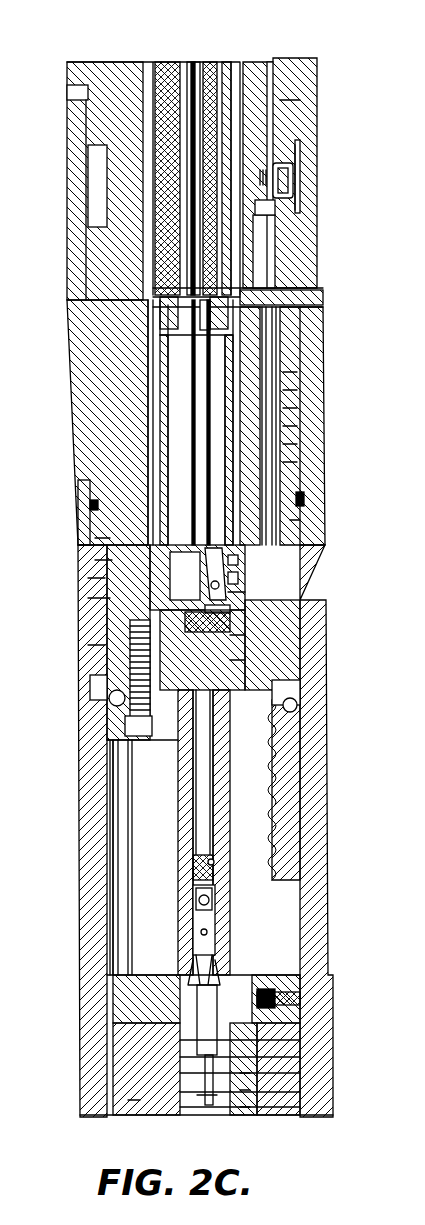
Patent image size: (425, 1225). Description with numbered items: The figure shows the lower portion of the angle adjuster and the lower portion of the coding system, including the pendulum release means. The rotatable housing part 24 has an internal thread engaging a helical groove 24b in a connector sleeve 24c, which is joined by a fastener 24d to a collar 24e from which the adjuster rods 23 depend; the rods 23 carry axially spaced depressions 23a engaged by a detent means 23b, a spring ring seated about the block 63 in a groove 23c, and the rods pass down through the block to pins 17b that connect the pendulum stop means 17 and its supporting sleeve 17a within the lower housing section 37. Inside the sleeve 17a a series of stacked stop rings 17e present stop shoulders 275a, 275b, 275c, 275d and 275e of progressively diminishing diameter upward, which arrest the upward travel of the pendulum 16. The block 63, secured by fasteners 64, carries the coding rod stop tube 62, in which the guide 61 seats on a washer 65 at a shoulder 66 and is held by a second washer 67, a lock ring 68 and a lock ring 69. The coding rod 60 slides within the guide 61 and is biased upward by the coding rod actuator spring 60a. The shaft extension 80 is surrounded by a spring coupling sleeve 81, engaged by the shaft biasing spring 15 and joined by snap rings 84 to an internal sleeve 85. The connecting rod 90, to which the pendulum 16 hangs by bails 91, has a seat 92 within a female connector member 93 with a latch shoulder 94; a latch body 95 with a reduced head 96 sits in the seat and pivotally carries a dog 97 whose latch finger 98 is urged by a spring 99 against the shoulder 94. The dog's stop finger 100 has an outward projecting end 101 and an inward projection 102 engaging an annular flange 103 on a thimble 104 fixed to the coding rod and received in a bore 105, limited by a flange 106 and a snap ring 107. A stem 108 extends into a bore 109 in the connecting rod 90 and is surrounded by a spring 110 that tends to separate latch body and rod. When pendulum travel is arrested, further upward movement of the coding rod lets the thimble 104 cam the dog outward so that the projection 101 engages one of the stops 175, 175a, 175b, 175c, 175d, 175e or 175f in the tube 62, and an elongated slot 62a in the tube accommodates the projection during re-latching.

The shaft biasing spring 15 is at (130, 634).
The pendulum 16 is at (200, 1108).
The pendulum stop means 17 is at (94, 1064).
The supporting sleeve 17a is at (105, 1020).
The pins 17b is at (300, 990).
The stacked stop rings 17e is at (135, 1105).
The adjuster rods 23 is at (302, 818).
The depressions 23a is at (300, 770).
The detent means 23b is at (296, 710).
The groove 23c is at (300, 688).
The housing part 24 is at (288, 62).
The helical groove 24b is at (287, 107).
The connector sleeve 24c is at (293, 150).
The fastener 24d is at (290, 173).
The collar 24e is at (277, 217).
The lower housing section 37 is at (90, 914).
The coding rod 60 is at (190, 66).
The coding rod actuator spring 60a is at (230, 288).
The tubular guide and stop ball support 61 is at (208, 62).
The coding rod stop tube 62 is at (118, 406).
The elongated slot 62a is at (190, 552).
The block 63 is at (108, 728).
The fasteners 64 is at (96, 678).
The washer 65 is at (170, 336).
The shoulder 66 is at (250, 330).
The second washer 67 is at (160, 307).
The lock ring 68 is at (222, 302).
The lock ring 69 is at (165, 320).
The shaft extension 80 is at (226, 62).
The spring coupling sleeve 81 is at (228, 125).
The snap rings 84 is at (155, 282).
The internal sleeve 85 is at (168, 62).
The connecting rod 90 is at (180, 870).
The bails 91 is at (196, 960).
The seat 92 is at (92, 648).
The female connector member 93 is at (240, 650).
The latch shoulder 94 is at (215, 615).
The latch body 95 is at (180, 550).
The reduced head 96 is at (185, 590).
The dog 97 is at (205, 605).
The latch finger 98 is at (240, 630).
The spring 99 is at (180, 576).
The stop finger 100 is at (175, 592).
The outward projecting end 101 is at (160, 566).
The inward projection 102 is at (200, 578).
The annular flange 103 is at (185, 562).
The thimble 104 is at (240, 520).
The bore 105 is at (165, 522).
The flange 106 is at (175, 540).
The snap ring 107 is at (165, 518).
The stem 108 is at (198, 790).
The bore 109 is at (198, 812).
The spring 110 is at (216, 862).
The stop 175 is at (305, 478).
The stop 175a is at (300, 462).
The stop 175b is at (300, 444).
The stop 175c is at (300, 426).
The stop 175d is at (300, 408).
The stop 175e is at (300, 390).
The stop 175f is at (300, 372).
The stop shoulder 275a is at (250, 1110).
The stop shoulder 275b is at (252, 1090).
The stop shoulder 275c is at (250, 1087).
The stop shoulder 275d is at (250, 1062).
The upper stop shoulder 275e is at (252, 1034).